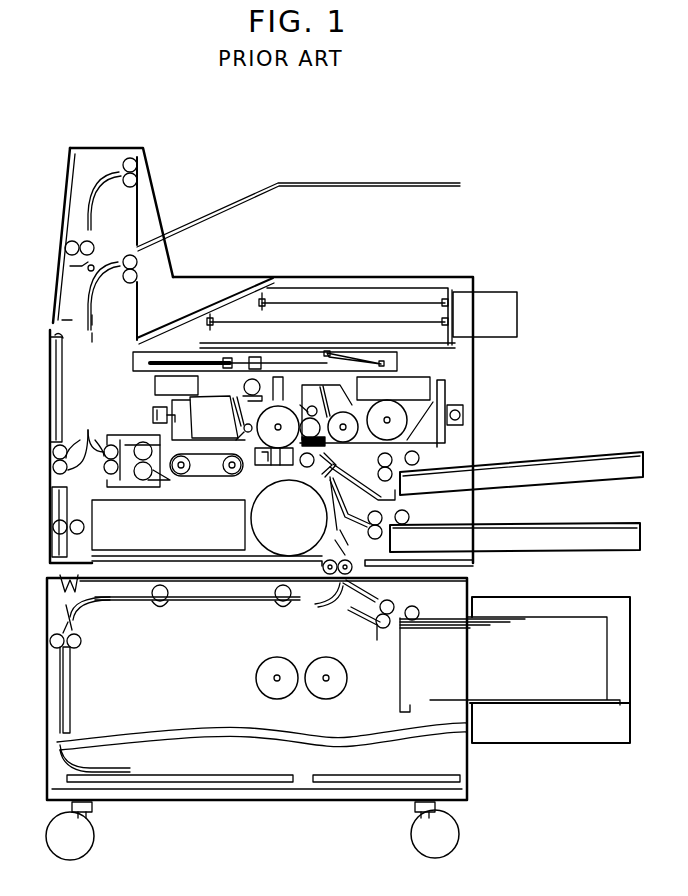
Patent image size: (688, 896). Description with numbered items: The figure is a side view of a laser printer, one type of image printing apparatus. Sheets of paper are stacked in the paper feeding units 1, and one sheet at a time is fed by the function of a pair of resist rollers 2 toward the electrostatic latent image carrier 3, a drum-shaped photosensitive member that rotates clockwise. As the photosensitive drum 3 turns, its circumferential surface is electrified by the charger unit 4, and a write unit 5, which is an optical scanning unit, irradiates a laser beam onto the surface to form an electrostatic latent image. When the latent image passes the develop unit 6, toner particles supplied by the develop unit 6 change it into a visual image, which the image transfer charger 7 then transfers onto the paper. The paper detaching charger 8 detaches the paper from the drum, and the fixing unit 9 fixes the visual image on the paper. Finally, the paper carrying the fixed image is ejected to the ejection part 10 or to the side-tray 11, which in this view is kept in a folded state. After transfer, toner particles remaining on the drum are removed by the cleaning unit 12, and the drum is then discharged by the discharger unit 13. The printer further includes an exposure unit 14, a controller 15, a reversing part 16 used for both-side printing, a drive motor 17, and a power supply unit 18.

The paper feeding units 1 is at (613, 458).
The resist rollers 2 is at (307, 463).
The electrostatic latent image carrier 3 is at (384, 400).
The charger unit 4 is at (279, 384).
The write unit 5 is at (152, 357).
The develop unit 6 is at (326, 412).
The image transfer charger 7 is at (289, 457).
The paper detaching charger 8 is at (256, 433).
The fixing unit 9 is at (141, 441).
The ejection part 10 is at (153, 270).
The side-tray 11 is at (53, 347).
The cleaning unit 12 is at (196, 420).
The discharger unit 13 is at (238, 407).
The exposure unit 14 is at (296, 408).
The controller 15 is at (405, 313).
The reversing part 16 is at (98, 670).
The drive motor 17 is at (274, 540).
The power supply unit 18 is at (100, 510).